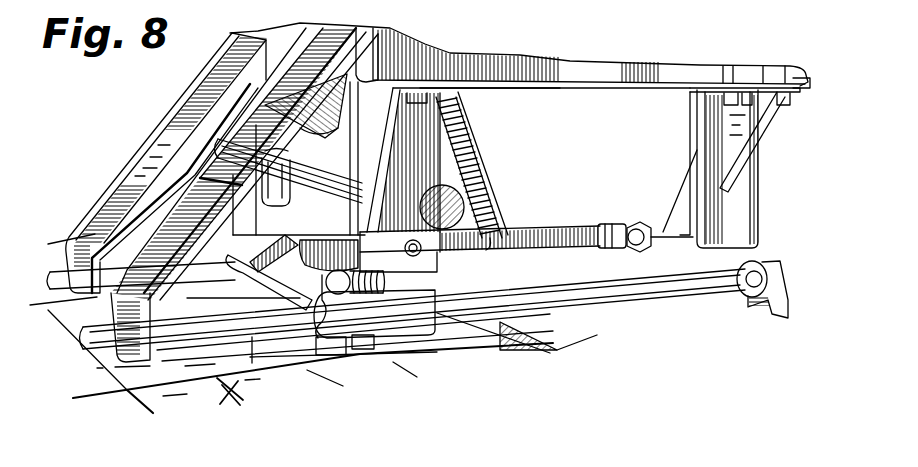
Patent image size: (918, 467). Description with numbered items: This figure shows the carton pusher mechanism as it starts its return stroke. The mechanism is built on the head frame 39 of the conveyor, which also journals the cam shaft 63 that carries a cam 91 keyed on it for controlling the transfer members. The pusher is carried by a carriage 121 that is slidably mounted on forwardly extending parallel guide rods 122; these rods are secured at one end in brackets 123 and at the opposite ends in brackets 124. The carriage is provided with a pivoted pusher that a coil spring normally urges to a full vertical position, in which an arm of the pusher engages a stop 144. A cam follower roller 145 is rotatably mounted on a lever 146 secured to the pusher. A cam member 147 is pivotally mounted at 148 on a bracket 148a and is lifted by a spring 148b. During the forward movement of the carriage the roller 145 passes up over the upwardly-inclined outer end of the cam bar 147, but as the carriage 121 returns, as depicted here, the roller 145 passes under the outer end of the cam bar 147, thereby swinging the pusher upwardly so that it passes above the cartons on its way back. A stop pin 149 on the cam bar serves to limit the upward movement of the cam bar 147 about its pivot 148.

The head frame 39 is at (567, 73).
The cam shaft 63 is at (327, 172).
The cam 91 is at (207, 172).
The carriage 121 is at (248, 384).
The guide rods 122 is at (65, 338).
The brackets 123 is at (765, 312).
The brackets 124 is at (197, 220).
The stop 144 is at (367, 227).
The cam follower roller 145 is at (314, 302).
The lever 146 is at (322, 296).
The cam member 147 is at (352, 236).
The pivot 148 is at (640, 229).
The bracket 148a is at (713, 140).
The spring 148b is at (487, 183).
The stop pin 149 is at (423, 250).